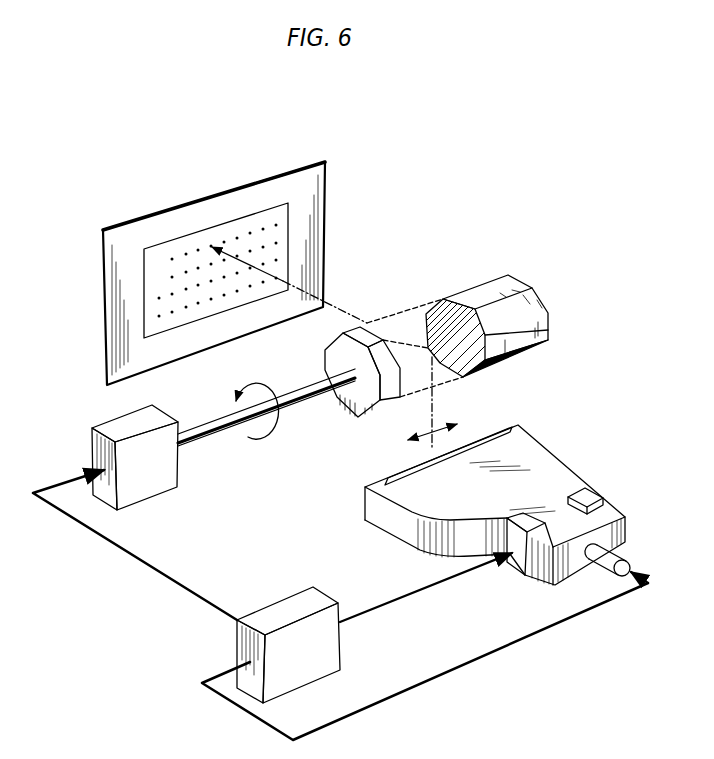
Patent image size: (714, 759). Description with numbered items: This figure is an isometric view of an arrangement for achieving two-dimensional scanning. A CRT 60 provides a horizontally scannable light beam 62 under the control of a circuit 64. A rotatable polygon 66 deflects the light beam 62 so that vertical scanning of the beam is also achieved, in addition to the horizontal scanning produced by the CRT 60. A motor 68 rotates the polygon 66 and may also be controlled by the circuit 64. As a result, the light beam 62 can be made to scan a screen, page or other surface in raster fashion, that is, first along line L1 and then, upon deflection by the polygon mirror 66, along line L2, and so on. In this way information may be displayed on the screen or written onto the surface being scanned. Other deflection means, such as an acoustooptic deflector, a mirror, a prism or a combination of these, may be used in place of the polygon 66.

The CRT 60 is at (572, 493).
The light beam 62 is at (433, 399).
The circuit 64 is at (290, 605).
The rotatable polygon 66 is at (478, 297).
The motor 68 is at (177, 477).
The line L1 is at (160, 263).
The line L2 is at (157, 281).